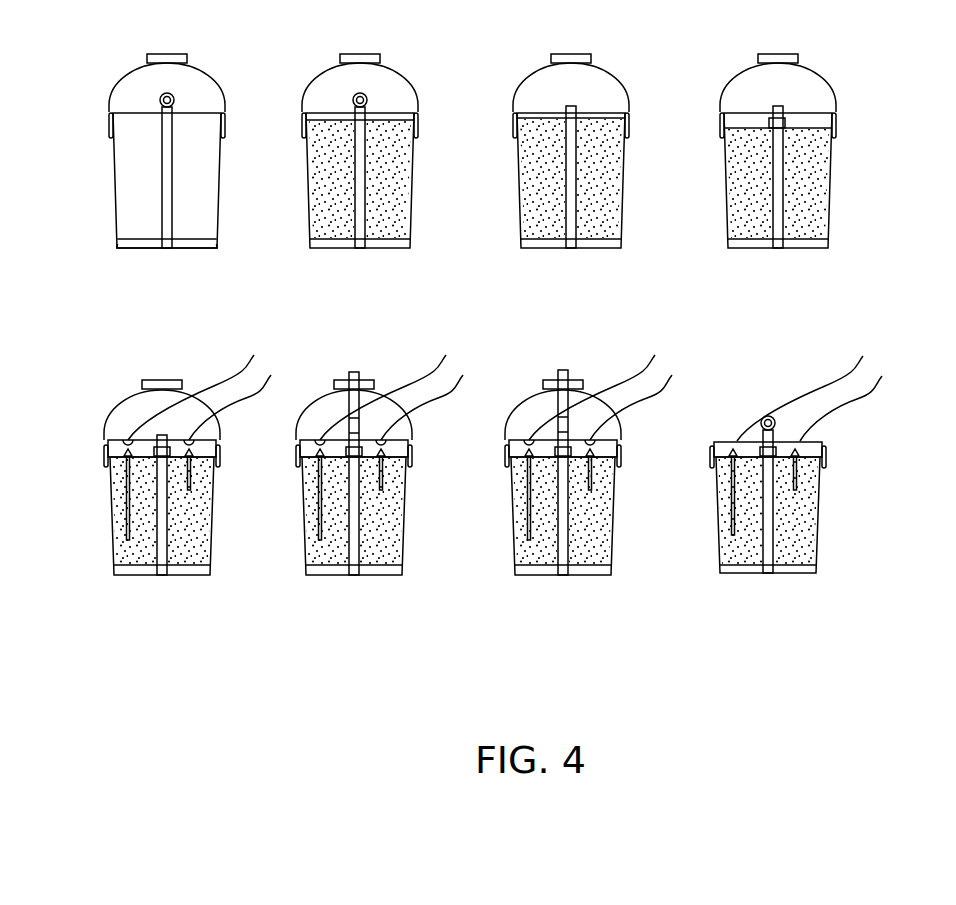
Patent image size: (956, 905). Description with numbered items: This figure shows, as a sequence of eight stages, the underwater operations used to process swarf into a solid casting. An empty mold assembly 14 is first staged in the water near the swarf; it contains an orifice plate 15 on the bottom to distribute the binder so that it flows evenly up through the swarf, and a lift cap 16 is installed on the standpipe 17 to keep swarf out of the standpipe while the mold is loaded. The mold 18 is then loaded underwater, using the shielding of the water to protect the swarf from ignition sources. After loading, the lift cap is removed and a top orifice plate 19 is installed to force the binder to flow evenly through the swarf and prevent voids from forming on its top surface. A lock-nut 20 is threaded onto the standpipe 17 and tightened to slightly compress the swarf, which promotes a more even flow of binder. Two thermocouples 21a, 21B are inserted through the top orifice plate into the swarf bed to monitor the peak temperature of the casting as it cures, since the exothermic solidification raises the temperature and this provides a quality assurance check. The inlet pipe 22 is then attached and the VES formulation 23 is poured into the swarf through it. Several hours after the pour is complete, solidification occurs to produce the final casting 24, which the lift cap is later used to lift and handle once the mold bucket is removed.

The mold assembly 14 is at (107, 157).
The orifice plate 15 is at (110, 242).
The lift cap 16 is at (170, 95).
The standpipe 17 is at (173, 167).
The mold 18 is at (409, 170).
The top orifice plate 19 is at (590, 107).
The lock-nut 20 is at (785, 120).
The thermocouple 21a is at (126, 447).
The thermocouple 21B is at (198, 450).
The inlet pipe 22 is at (348, 402).
The VES formulation 23 is at (565, 369).
The final casting 24 is at (819, 493).